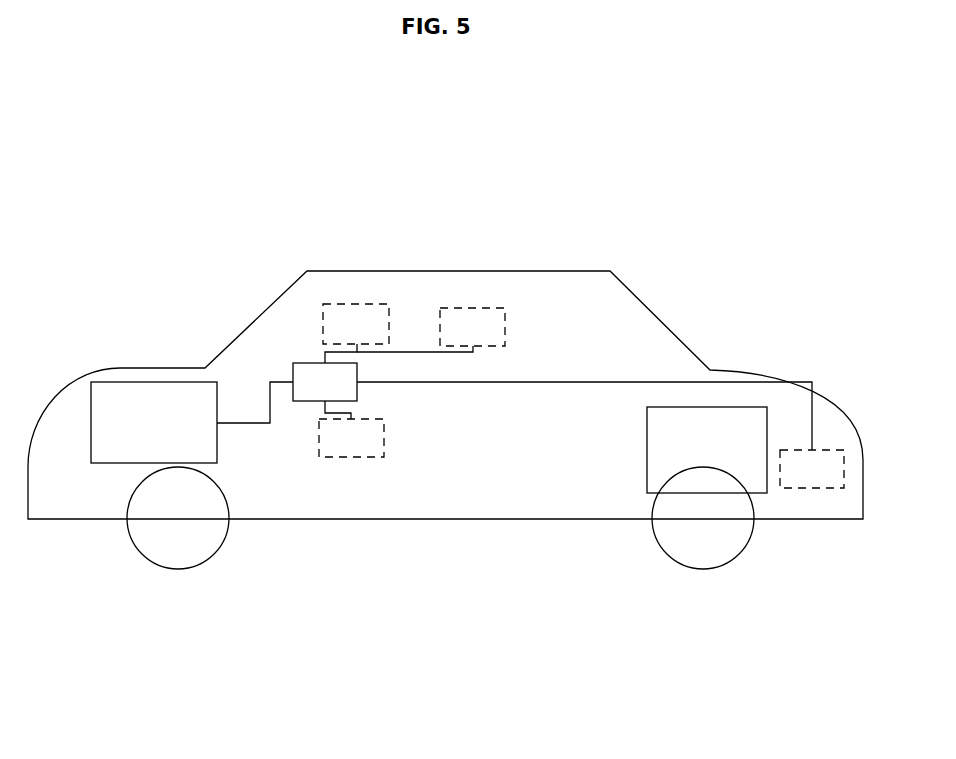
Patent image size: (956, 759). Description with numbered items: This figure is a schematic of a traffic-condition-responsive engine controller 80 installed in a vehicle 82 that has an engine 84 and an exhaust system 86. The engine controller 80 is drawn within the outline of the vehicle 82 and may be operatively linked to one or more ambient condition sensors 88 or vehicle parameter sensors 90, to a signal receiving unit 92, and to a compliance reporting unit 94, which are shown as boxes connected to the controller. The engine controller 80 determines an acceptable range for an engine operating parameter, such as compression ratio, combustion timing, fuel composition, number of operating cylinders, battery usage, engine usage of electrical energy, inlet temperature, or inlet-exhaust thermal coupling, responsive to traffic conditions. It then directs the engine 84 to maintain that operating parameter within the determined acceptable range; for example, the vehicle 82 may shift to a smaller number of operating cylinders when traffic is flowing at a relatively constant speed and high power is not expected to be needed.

The engine controller 80 is at (293, 377).
The vehicle 82 is at (275, 320).
The engine 84 is at (145, 400).
The exhaust system 86 is at (718, 413).
The ambient condition sensor 88 is at (494, 318).
The vehicle parameter sensor 90 is at (808, 480).
The signal receiving unit 92 is at (340, 315).
The compliance reporting unit 94 is at (338, 450).